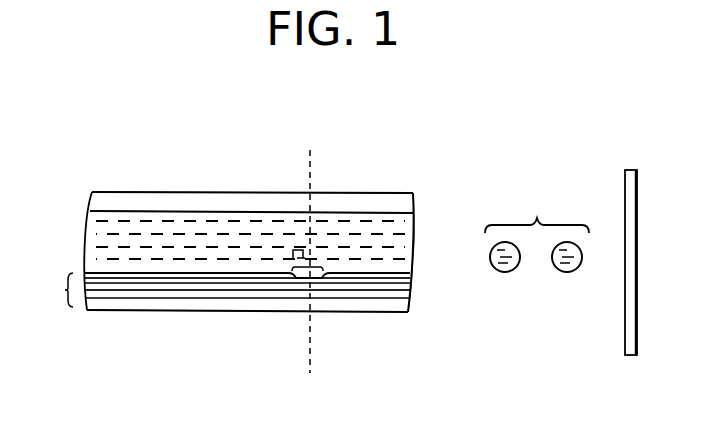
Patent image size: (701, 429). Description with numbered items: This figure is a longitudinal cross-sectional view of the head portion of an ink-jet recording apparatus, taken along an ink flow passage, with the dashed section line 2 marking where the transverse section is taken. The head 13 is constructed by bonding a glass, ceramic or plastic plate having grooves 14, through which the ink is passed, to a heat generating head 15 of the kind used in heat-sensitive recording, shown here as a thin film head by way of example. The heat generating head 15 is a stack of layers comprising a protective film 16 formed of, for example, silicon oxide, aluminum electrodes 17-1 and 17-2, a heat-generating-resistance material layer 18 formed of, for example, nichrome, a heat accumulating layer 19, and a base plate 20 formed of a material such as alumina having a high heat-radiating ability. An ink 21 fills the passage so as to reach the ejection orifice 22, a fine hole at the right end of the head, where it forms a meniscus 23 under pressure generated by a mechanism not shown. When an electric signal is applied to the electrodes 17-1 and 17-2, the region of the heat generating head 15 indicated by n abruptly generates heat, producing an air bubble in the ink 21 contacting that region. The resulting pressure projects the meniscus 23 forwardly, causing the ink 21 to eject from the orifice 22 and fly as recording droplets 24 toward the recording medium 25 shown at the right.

The section line 2— 2 is at (312, 264).
The head 13 is at (203, 192).
The grooves 14 is at (260, 212).
The heat generating head 15 is at (220, 290).
The protective film 16 is at (108, 275).
The aluminum electrode 17-1 is at (143, 280).
The aluminum electrode 17-2 is at (377, 282).
The heat-generating-resistance material layer 18 is at (212, 289).
The heat accumulating layer 19 is at (261, 305).
The base plate 20 is at (343, 313).
The ink 21 is at (136, 213).
The ejection orifice 22 is at (412, 262).
The meniscus 23 is at (413, 240).
The recording droplets 24 is at (537, 228).
The recording medium 25 is at (625, 195).